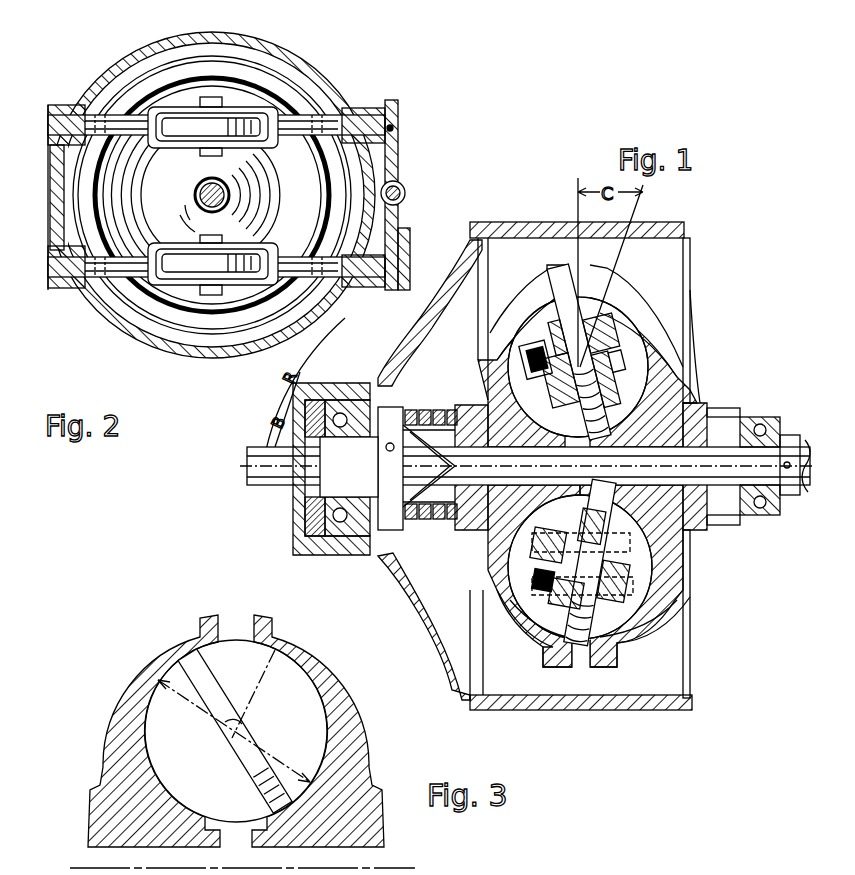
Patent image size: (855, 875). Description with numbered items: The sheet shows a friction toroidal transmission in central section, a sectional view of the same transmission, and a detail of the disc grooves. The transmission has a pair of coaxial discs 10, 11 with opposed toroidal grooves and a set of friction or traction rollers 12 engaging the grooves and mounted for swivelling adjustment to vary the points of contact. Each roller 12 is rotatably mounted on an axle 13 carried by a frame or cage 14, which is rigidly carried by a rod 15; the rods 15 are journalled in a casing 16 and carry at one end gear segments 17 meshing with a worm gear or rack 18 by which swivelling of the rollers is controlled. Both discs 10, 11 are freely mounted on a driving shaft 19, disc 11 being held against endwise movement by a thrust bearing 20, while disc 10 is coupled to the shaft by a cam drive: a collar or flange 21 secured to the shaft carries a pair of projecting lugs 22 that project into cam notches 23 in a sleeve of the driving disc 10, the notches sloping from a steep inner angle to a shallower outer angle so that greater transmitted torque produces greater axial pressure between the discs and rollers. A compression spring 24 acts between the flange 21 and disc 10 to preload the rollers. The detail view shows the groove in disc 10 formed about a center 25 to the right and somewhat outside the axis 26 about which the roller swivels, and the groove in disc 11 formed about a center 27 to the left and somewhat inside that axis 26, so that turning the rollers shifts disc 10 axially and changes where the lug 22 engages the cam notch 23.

In FIG. 1, the disc 10 is at (490, 383).
In FIG. 3, the disc 10 is at (122, 740).
In FIG. 1, the disc 11 is at (678, 380).
In FIG. 3, the disc 11 is at (343, 752).
In FIG. 2, the friction roller 12 is at (182, 125).
In FIG. 1, the friction roller 12 is at (600, 325).
In FIG. 3, the friction roller 12 is at (250, 783).
In FIG. 1, the axle 13 is at (600, 367).
In FIG. 2, the frame or cage 14 is at (285, 105).
In FIG. 1, the frame or cage 14 is at (562, 316).
In FIG. 2, the rod 15 is at (128, 124).
In FIG. 2, the casing 16 is at (298, 64).
In FIG. 1, the casing 16 is at (645, 710).
In FIG. 2, the gear segment 17 is at (398, 155).
In FIG. 2, the worm gear or rack 18 is at (403, 192).
In FIG. 2, the driving shaft 19 is at (229, 191).
In FIG. 1, the driving shaft 19 is at (283, 477).
In FIG. 1, the thrust bearing 20 is at (760, 424).
In FIG. 1, the collar or flange 21 is at (392, 530).
In FIG. 1, the projecting lug 22 is at (347, 555).
In FIG. 1, the cam notch 23 is at (428, 410).
In FIG. 1, the compression spring 24 is at (428, 520).
In FIG. 3, the center 25 is at (242, 729).
In FIG. 3, the axis 26 is at (243, 735).
In FIG. 3, the center 27 is at (232, 736).